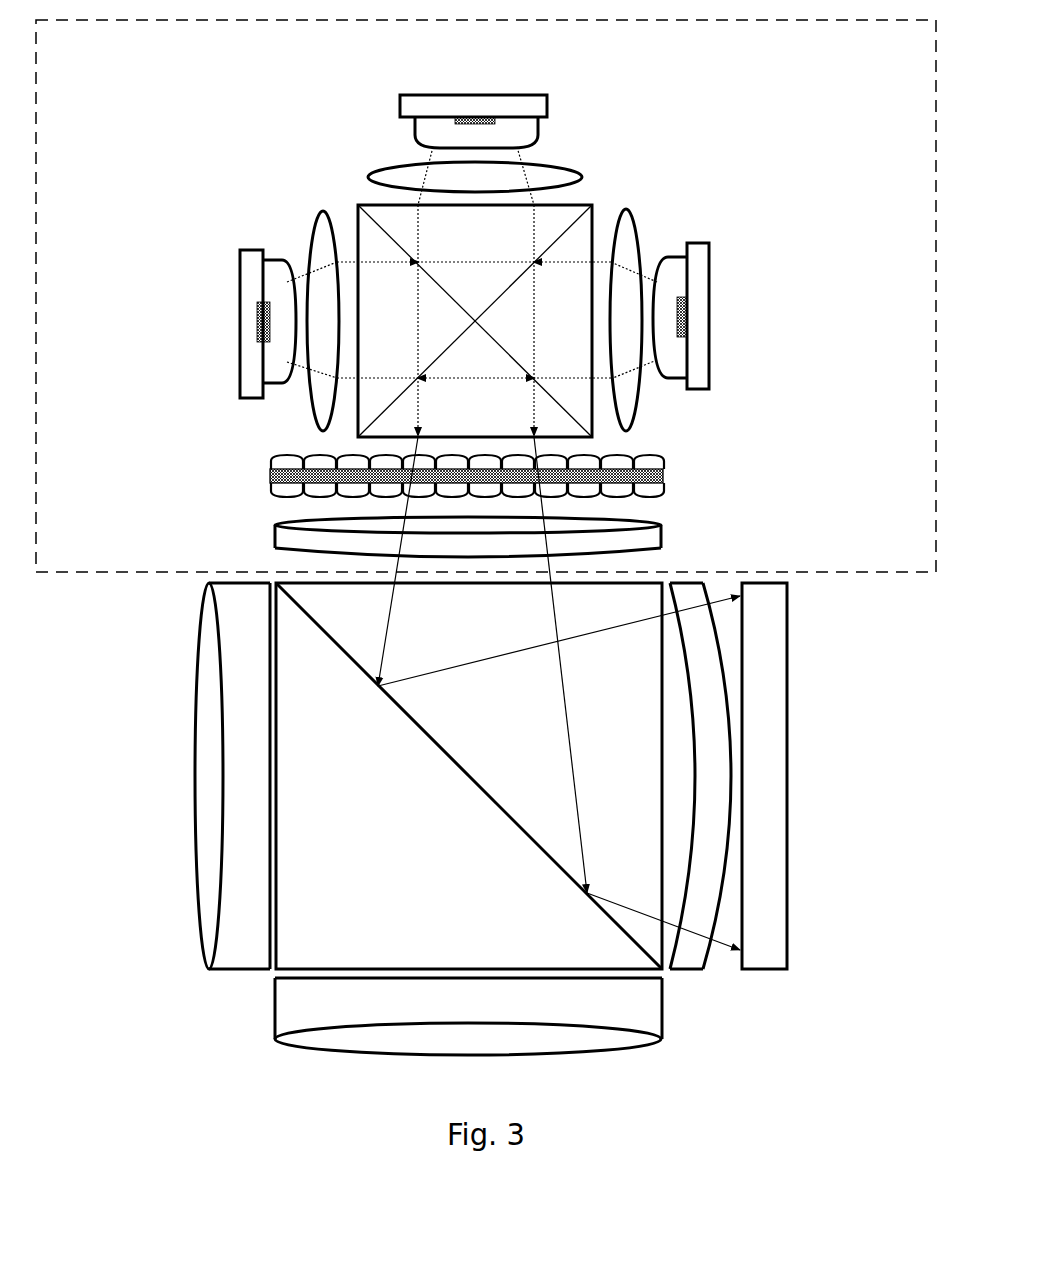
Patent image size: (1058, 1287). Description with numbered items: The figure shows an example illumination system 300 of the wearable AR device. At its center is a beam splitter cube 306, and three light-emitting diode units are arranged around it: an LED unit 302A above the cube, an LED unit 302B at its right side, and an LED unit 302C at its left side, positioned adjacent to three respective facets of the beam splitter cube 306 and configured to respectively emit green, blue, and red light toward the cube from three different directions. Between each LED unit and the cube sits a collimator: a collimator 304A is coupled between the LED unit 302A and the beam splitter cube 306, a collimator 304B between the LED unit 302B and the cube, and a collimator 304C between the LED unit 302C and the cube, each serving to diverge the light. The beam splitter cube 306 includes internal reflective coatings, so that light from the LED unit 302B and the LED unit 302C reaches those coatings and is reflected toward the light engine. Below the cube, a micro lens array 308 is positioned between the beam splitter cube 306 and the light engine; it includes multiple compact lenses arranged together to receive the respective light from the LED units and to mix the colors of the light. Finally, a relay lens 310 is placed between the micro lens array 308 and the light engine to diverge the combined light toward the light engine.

The illumination system 300 is at (501, 55).
The LED unit 302A is at (493, 95).
The LED unit 302B is at (708, 292).
The LED unit 302C is at (240, 277).
The collimator 304A is at (553, 162).
The collimator 304B is at (640, 237).
The collimator 304C is at (312, 243).
The beam splitter cube 306 is at (358, 205).
The micro lens array 308 is at (664, 457).
The relay lens 310 is at (663, 537).